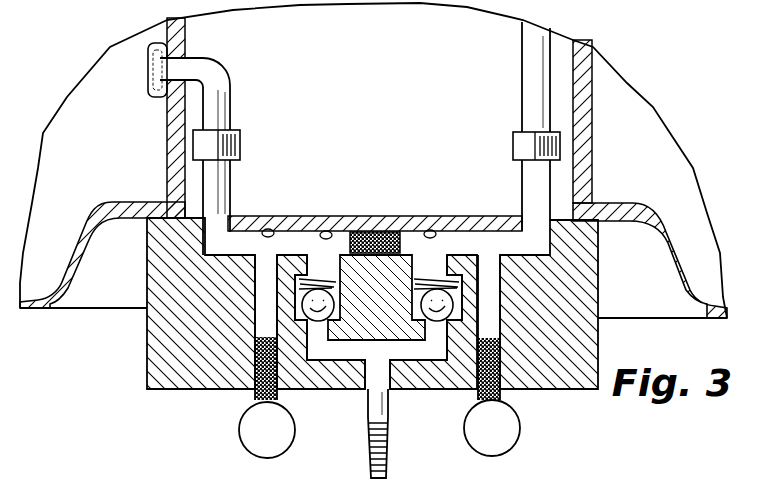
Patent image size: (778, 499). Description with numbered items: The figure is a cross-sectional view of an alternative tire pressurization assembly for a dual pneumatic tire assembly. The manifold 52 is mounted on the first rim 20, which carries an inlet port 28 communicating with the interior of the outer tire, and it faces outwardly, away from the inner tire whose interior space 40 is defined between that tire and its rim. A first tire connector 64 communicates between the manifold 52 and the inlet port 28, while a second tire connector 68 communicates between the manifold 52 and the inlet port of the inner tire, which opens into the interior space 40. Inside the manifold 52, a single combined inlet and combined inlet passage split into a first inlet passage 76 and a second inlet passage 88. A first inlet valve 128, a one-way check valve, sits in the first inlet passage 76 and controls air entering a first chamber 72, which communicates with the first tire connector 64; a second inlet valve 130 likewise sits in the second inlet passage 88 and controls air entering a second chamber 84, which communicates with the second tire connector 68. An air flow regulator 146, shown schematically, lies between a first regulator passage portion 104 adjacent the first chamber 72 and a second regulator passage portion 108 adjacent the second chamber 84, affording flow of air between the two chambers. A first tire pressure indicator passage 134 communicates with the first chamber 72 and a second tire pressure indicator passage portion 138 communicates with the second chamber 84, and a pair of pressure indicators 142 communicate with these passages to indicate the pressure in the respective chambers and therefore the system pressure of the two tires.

The first rim 20 is at (52, 296).
The inlet port 28 is at (205, 62).
The interior space 40 is at (78, 160).
The manifold 52 is at (152, 267).
The first tire connector 64 is at (222, 77).
The second tire connector 68 is at (530, 53).
The first chamber 72 is at (270, 226).
The first inlet passage 76 is at (340, 356).
The second chamber 84 is at (499, 216).
The second inlet passage 88 is at (423, 356).
The first regulator passage portion 104 is at (326, 230).
The second regulator passage portion 108 is at (431, 229).
The first inlet valve 128 is at (346, 293).
The second inlet valve 130 is at (463, 296).
The first tire pressure indicator passage 134 is at (293, 292).
The second tire pressure indicator passage portion 138 is at (490, 322).
The pressure indicators 142 is at (255, 370).
The air flow regulator 146 is at (378, 231).